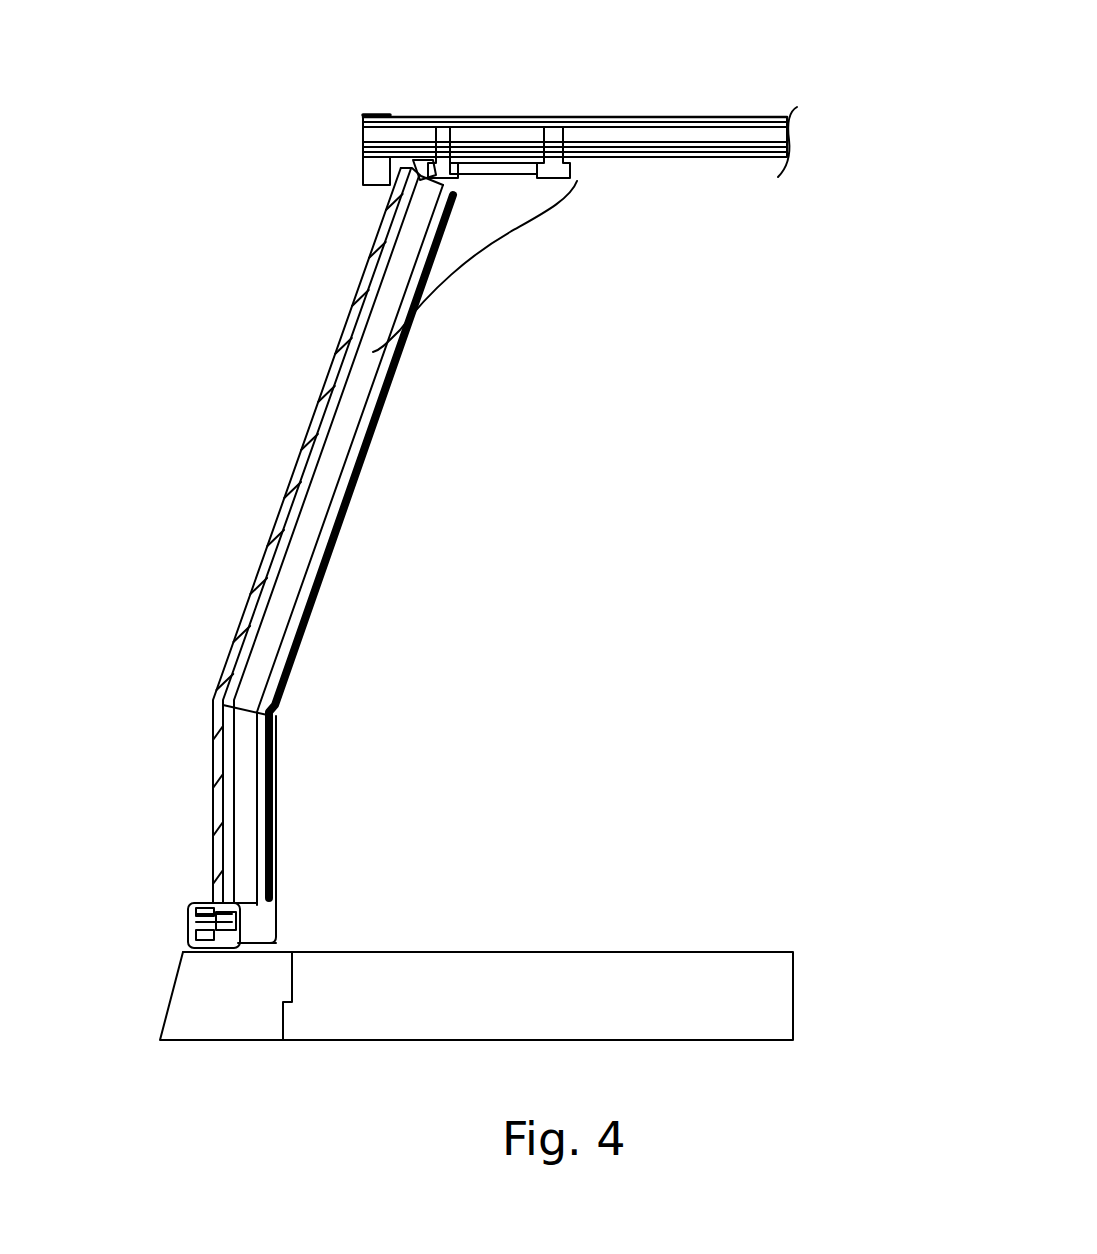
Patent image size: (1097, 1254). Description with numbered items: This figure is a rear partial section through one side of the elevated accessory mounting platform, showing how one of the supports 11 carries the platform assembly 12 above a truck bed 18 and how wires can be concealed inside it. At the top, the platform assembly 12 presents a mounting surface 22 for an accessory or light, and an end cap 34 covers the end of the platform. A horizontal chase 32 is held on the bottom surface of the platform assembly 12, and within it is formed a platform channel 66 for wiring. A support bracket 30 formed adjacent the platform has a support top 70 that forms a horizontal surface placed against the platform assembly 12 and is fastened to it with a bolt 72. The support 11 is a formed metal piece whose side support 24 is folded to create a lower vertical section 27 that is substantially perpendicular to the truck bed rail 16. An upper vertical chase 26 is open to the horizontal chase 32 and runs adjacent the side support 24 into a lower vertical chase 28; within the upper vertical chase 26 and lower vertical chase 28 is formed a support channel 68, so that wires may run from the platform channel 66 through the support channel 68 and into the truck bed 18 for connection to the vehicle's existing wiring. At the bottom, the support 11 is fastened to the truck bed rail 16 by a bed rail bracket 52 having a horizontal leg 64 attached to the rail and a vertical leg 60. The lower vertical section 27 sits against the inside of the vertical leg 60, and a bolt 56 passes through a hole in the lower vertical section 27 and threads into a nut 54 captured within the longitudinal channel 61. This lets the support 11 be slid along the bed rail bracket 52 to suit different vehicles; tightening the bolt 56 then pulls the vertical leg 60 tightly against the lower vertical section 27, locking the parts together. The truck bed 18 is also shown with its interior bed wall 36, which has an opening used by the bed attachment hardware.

The support 11 is at (243, 574).
The platform assembly 12 is at (620, 87).
The truck bed rail 16 is at (236, 957).
The truck bed 18 is at (841, 982).
The mounting surface 22 is at (715, 118).
The side support 24 is at (318, 413).
The upper vertical chase 26 is at (337, 510).
The lower vertical section 27 is at (212, 800).
The lower vertical chase 28 is at (272, 800).
The support bracket 30 is at (510, 217).
The horizontal chase 32 is at (698, 147).
The end cap 34 is at (350, 168).
The interior bed wall 36 is at (288, 1017).
The bed rail bracket 52 is at (168, 893).
The nut 54 is at (203, 907).
The bolt 56 is at (240, 910).
The vertical leg 60 is at (187, 933).
The longitudinal channel 61 is at (188, 917).
The horizontal leg 64 is at (245, 946).
The platform channel 66 is at (758, 135).
The support channel 68 is at (408, 332).
The support top 70 is at (572, 155).
The bolt 72 is at (450, 178).